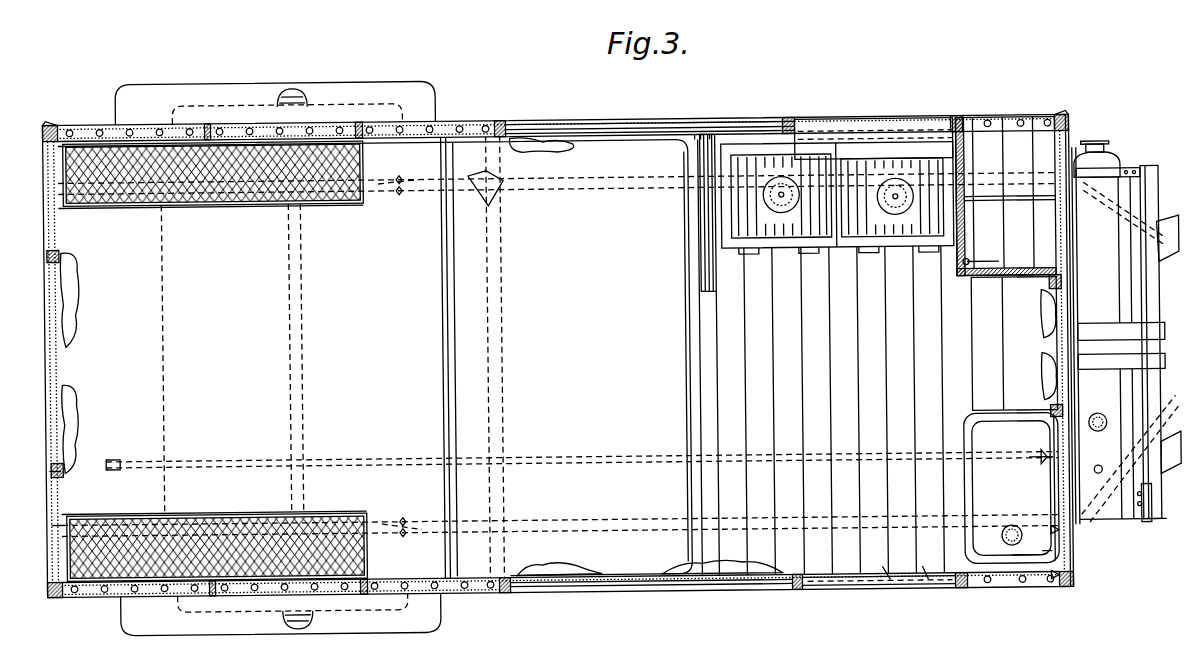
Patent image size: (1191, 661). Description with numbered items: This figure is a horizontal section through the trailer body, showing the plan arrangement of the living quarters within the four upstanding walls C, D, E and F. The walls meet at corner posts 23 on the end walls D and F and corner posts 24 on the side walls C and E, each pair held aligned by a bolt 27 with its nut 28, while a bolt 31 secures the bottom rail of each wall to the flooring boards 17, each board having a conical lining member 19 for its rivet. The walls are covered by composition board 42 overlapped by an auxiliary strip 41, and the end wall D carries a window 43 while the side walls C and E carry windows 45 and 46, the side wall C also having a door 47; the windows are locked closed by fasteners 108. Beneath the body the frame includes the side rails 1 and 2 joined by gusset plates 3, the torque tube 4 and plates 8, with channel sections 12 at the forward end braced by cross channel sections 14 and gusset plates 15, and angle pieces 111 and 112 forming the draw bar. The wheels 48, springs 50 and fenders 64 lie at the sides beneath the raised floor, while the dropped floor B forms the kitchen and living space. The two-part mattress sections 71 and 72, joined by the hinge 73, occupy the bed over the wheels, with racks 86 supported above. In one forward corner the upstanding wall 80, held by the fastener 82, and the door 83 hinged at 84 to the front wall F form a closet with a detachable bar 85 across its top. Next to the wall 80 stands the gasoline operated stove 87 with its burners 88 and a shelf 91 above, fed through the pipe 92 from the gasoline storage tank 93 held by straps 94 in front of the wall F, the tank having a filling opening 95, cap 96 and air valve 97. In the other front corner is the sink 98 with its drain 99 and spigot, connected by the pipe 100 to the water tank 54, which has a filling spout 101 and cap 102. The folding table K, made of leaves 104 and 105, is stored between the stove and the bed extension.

The side rails 1 is at (410, 192).
The side rails 2 is at (648, 190).
The gusset plates 3 is at (486, 178).
The torque tube 4 is at (486, 416).
The plates 8 is at (42, 200).
The channel sections 12 is at (1148, 172).
The bracing cross channel sections 14 is at (1148, 426).
The gusset plates 15 is at (1145, 180).
The flooring boards 17 is at (900, 582).
The conical lining member 19 is at (1060, 535).
The corner posts 23 is at (50, 145).
The corner posts 24 is at (58, 126).
The bolt 27 is at (50, 118).
The nut 28 is at (52, 162).
The bolt 31 is at (470, 118).
The auxiliary strip 41 is at (502, 118).
The composition board 42 is at (97, 118).
The window 43 is at (50, 341).
The window 45 is at (640, 590).
The window 46 is at (615, 120).
The door 47 is at (878, 582).
The wheels 48 is at (228, 102).
The springs 50 is at (348, 203).
The water tank 54 is at (165, 505).
The fenders 64 is at (345, 100).
The mattress section 71 is at (261, 328).
The mattress section 72 is at (375, 360).
The hinge 73 is at (443, 328).
The upstanding wall 80 is at (969, 264).
The fastener 82 is at (995, 266).
The door 83 is at (1020, 281).
The hinge 84 is at (1058, 284).
The detachable bar 85 is at (996, 198).
The racks 86 is at (360, 170).
The gasoline operated stove 87 is at (752, 160).
The burners 88 is at (892, 182).
The shelf 91 is at (930, 135).
The pipe 92 is at (1079, 158).
The gasoline storage tank 93 is at (1130, 173).
The straps 94 is at (1105, 160).
The filling opening 95 is at (1043, 378).
The cap 96 is at (1098, 418).
The air valve 97 is at (1097, 471).
The sink 98 is at (970, 420).
The drain 99 is at (1052, 497).
The pipe 100 is at (620, 446).
The filling spout 101 is at (52, 528).
The cap 102 is at (60, 542).
The table leaf 104 is at (700, 136).
The table leaf 105 is at (714, 136).
The fasteners 108 is at (540, 148).
The angle piece 111 is at (1172, 336).
The angle piece 112 is at (1175, 332).
The floor B is at (792, 590).
The side wall C is at (495, 590).
The end wall D is at (44, 393).
The side wall E is at (905, 118).
The front wall F is at (1040, 345).
The table K is at (717, 280).